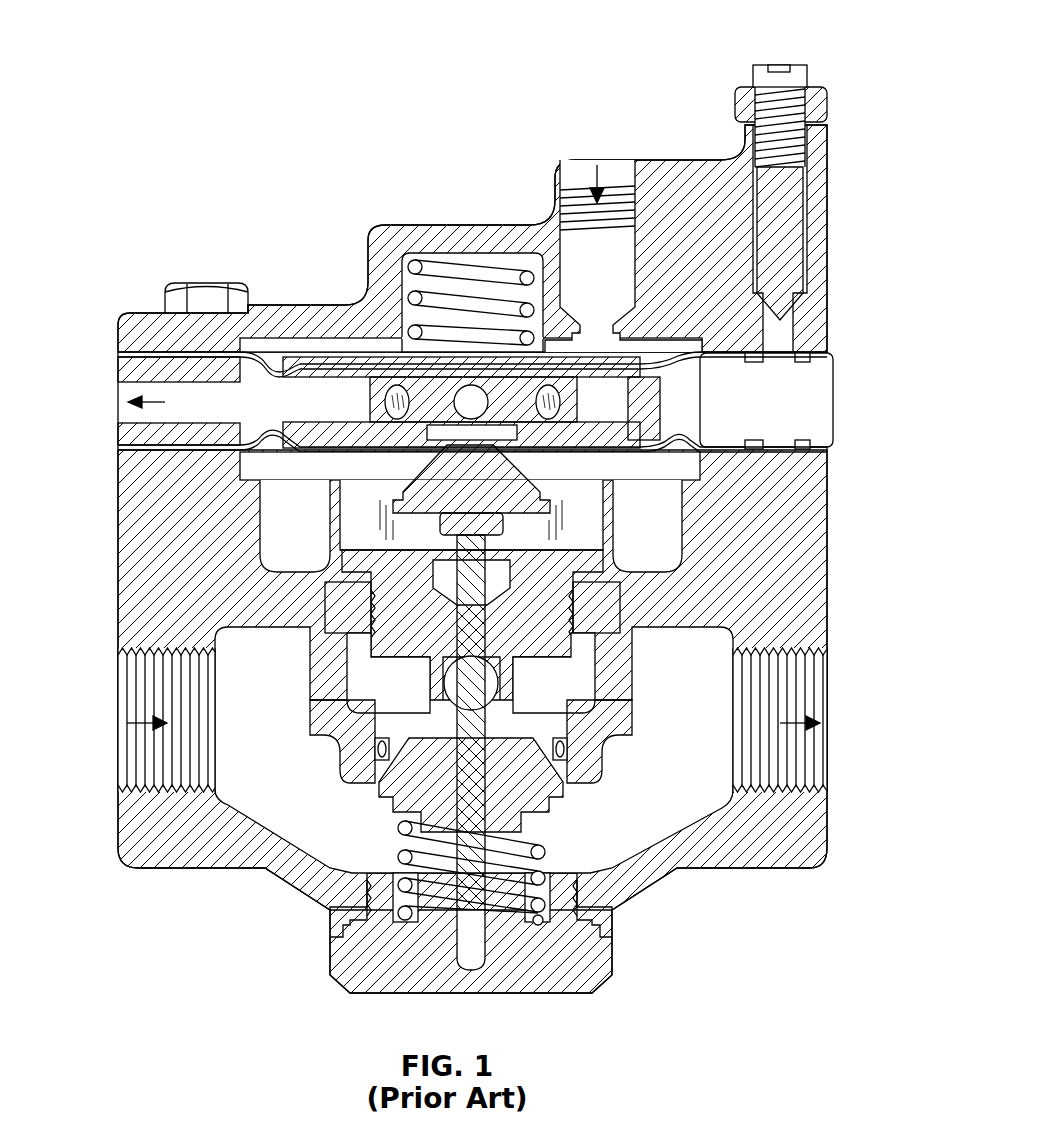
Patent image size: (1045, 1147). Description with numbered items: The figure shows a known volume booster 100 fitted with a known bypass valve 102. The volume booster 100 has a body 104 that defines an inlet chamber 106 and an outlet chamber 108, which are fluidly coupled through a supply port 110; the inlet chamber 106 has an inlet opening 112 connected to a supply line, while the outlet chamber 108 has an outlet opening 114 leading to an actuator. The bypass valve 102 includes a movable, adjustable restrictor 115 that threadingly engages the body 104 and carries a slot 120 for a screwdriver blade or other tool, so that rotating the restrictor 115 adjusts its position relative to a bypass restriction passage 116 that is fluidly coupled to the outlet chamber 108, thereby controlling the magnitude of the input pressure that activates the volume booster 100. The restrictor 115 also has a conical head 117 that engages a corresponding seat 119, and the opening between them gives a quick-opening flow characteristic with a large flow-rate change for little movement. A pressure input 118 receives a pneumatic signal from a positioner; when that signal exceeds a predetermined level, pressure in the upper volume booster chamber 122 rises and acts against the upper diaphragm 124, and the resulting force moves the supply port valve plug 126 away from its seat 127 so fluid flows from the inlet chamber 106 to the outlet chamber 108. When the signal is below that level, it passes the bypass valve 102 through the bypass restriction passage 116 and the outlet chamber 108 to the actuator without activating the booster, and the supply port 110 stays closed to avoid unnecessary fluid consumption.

The volume booster 100 is at (143, 68).
The bypass valve 102 is at (838, 112).
The body 104 is at (803, 615).
The inlet chamber 106 is at (248, 648).
The outlet chamber 108 is at (693, 797).
The supply port 110 is at (503, 730).
The inlet opening 112 is at (165, 700).
The outlet opening 114 is at (807, 698).
The restrictor 115 is at (790, 105).
The bypass restriction passage 116 is at (783, 427).
The conical head 117 is at (797, 330).
The pressure input 118 is at (590, 178).
The seat 119 is at (795, 320).
The slot 120 is at (844, 162).
The upper volume booster chamber 122 is at (365, 348).
The upper diaphragm 124 is at (315, 360).
The supply port valve plug 126 is at (333, 880).
The seat 127 is at (345, 860).